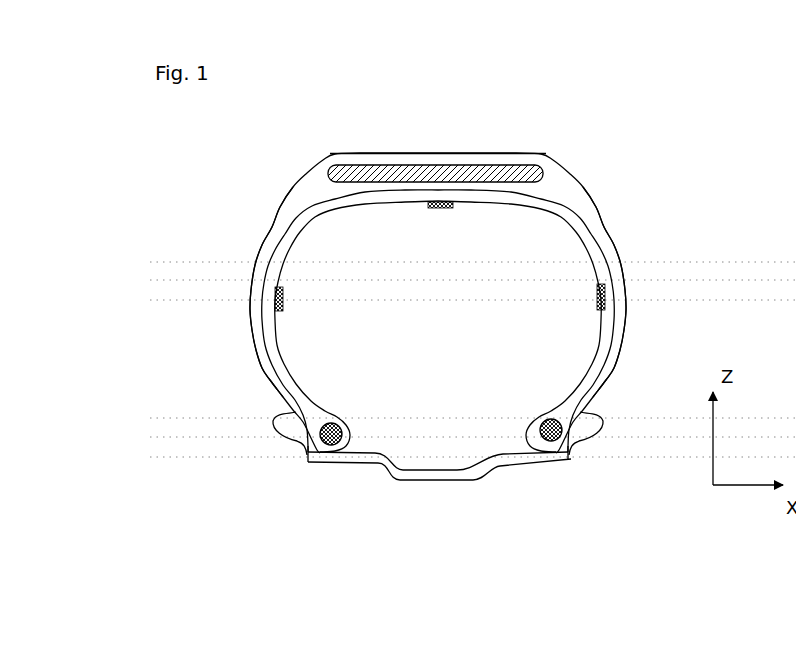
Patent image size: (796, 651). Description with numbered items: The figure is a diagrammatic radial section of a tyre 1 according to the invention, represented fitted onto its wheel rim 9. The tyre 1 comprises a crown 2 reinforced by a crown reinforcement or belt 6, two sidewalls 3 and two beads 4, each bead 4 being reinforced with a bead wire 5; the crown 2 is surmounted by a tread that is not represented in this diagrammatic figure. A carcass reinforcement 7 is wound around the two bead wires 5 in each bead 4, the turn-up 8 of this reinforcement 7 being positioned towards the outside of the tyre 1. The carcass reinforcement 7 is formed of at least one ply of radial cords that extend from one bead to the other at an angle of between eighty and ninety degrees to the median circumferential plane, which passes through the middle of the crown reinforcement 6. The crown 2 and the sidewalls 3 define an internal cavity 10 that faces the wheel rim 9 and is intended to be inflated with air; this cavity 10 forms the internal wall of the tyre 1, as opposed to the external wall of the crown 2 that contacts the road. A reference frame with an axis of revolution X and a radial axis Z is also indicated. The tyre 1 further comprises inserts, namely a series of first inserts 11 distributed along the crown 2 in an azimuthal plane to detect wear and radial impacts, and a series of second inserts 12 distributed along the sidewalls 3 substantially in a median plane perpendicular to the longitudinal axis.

The tyre 1 is at (630, 261).
The crown 2 is at (497, 157).
The sidewall 3 is at (250, 303).
The bead 4 is at (340, 456).
The bead wire 5 is at (352, 428).
The crown reinforcement 6 is at (441, 156).
The carcass reinforcement 7 is at (276, 243).
The turn-up 8 is at (283, 398).
The wheel rim 9 is at (303, 450).
The internal cavity 10 is at (466, 265).
The first insert 11 is at (428, 213).
The second insert 12 is at (292, 298).